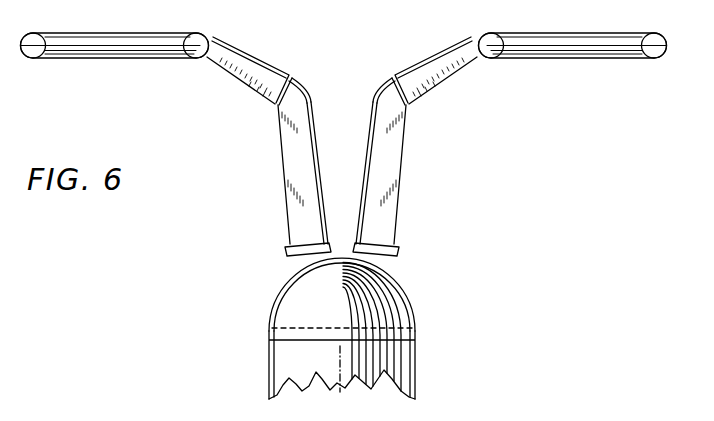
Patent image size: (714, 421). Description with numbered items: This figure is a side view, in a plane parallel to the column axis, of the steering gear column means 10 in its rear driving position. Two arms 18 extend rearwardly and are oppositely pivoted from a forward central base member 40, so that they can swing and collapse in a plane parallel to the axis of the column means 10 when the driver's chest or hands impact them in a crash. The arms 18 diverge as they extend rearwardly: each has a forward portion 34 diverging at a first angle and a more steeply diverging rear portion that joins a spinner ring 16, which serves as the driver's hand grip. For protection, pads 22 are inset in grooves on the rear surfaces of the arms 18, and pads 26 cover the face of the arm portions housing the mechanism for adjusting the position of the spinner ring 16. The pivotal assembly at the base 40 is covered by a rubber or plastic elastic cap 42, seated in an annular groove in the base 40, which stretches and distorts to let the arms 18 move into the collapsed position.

The steering gear column means 10 is at (421, 216).
The spinner ring 16 is at (150, 62).
The arm 18 is at (308, 208).
The pad 22 is at (374, 110).
The pad 26 is at (257, 61).
The forward portion 34 is at (284, 157).
The base member 40 is at (326, 363).
The elastic cap 42 is at (344, 308).